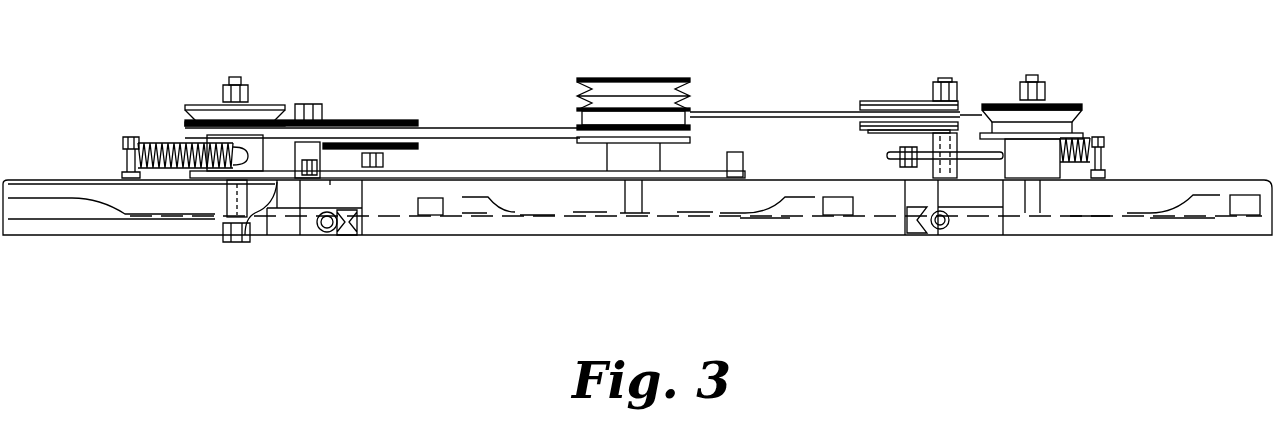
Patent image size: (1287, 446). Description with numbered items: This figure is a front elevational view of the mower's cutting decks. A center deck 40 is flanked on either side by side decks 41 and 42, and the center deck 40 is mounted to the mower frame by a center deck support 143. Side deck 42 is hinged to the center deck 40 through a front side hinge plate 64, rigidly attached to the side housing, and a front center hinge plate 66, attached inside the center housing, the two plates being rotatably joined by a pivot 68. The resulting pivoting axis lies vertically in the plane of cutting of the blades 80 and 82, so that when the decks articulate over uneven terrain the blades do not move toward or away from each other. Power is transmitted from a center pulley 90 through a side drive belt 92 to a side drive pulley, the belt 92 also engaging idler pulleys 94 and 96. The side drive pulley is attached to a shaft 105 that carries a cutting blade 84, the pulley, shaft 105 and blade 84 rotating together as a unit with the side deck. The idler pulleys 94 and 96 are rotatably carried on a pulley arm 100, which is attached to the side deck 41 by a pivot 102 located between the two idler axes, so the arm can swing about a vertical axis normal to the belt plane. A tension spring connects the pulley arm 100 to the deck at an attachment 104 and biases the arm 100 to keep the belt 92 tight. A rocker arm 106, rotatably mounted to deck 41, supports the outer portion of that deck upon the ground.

The center deck 40 is at (432, 177).
The side deck 41 is at (818, 178).
The side deck 42 is at (53, 178).
The front side hinge plate 64 is at (275, 228).
The front center hinge plate 66 is at (597, 197).
The pivot 68 is at (348, 237).
The blade 80 is at (43, 207).
The blade 82 is at (465, 205).
The cutting blade 84 is at (1220, 205).
The center pulley 90 is at (597, 78).
The side drive belt 92 is at (735, 112).
The idler pulley 94 is at (905, 183).
The idler pulley 96 is at (857, 103).
The pulley arm 100 is at (1003, 213).
The pivot 102 is at (953, 83).
The attachment 104 is at (1085, 140).
The shaft 105 is at (232, 207).
The rocker arm 106 is at (1104, 160).
The center deck support 143 is at (556, 177).